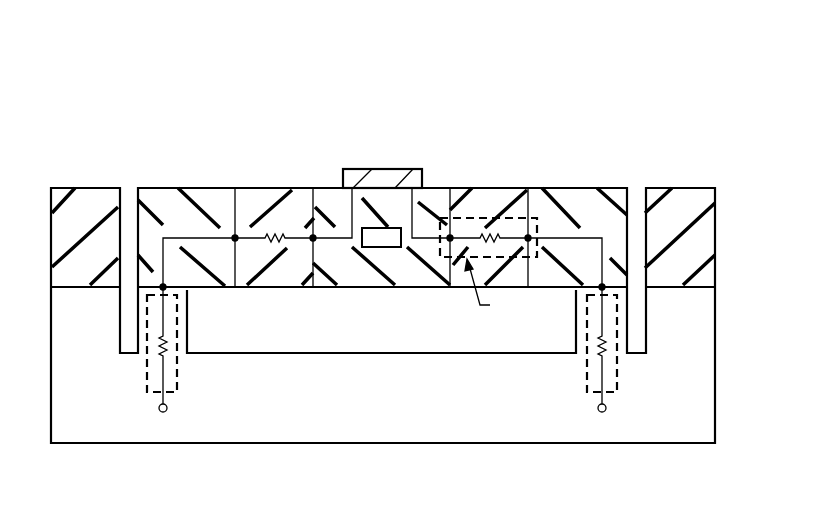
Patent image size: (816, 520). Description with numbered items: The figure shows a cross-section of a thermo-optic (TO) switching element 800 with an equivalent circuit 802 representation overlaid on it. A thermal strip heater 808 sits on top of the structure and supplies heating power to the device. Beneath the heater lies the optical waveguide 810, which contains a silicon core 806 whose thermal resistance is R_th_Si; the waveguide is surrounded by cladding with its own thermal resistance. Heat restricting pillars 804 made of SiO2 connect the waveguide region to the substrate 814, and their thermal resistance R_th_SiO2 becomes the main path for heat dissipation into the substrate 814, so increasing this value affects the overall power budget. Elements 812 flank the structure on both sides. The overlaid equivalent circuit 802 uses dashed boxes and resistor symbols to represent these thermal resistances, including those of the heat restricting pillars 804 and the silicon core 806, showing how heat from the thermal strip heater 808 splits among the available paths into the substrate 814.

The TO switching element 800 is at (515, 93).
The equivalent circuit 802 is at (200, 200).
The heat restricting pillars 804 is at (490, 190).
The silicon core 806 is at (380, 248).
The thermal strip heater 808 is at (381, 176).
The optical waveguide 810 is at (412, 279).
The element corresponding to element 130 812 is at (167, 196).
The substrate 814 is at (400, 409).